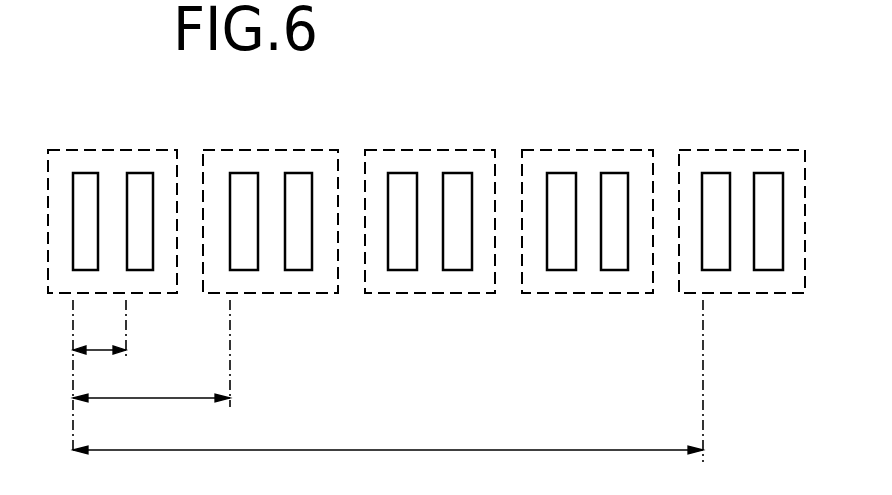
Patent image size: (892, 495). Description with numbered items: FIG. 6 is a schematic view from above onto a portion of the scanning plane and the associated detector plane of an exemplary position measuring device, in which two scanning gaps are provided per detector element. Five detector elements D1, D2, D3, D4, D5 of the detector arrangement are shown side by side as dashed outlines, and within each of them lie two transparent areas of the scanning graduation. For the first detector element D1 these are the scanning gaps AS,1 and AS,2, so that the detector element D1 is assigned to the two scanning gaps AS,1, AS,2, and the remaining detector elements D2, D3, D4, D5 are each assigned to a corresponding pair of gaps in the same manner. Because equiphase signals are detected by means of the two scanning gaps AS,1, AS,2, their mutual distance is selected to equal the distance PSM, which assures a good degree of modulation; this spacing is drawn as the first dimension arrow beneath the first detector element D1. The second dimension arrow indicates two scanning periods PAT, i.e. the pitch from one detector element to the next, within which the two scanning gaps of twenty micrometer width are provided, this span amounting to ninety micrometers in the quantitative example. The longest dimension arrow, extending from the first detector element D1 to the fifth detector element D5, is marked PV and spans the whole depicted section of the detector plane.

The detector element D1 is at (65, 157).
The scanning gap AS,1 is at (90, 193).
The scanning gap AS,2 is at (143, 188).
The detector element D2 is at (273, 165).
The detector element D3 is at (432, 160).
The detector element D4 is at (583, 165).
The detector element D5 is at (743, 167).
The distance of the two scanning gaps PSM is at (99, 376).
The scanning period PAT is at (151, 353).
The overall pitch / period PV is at (388, 381).